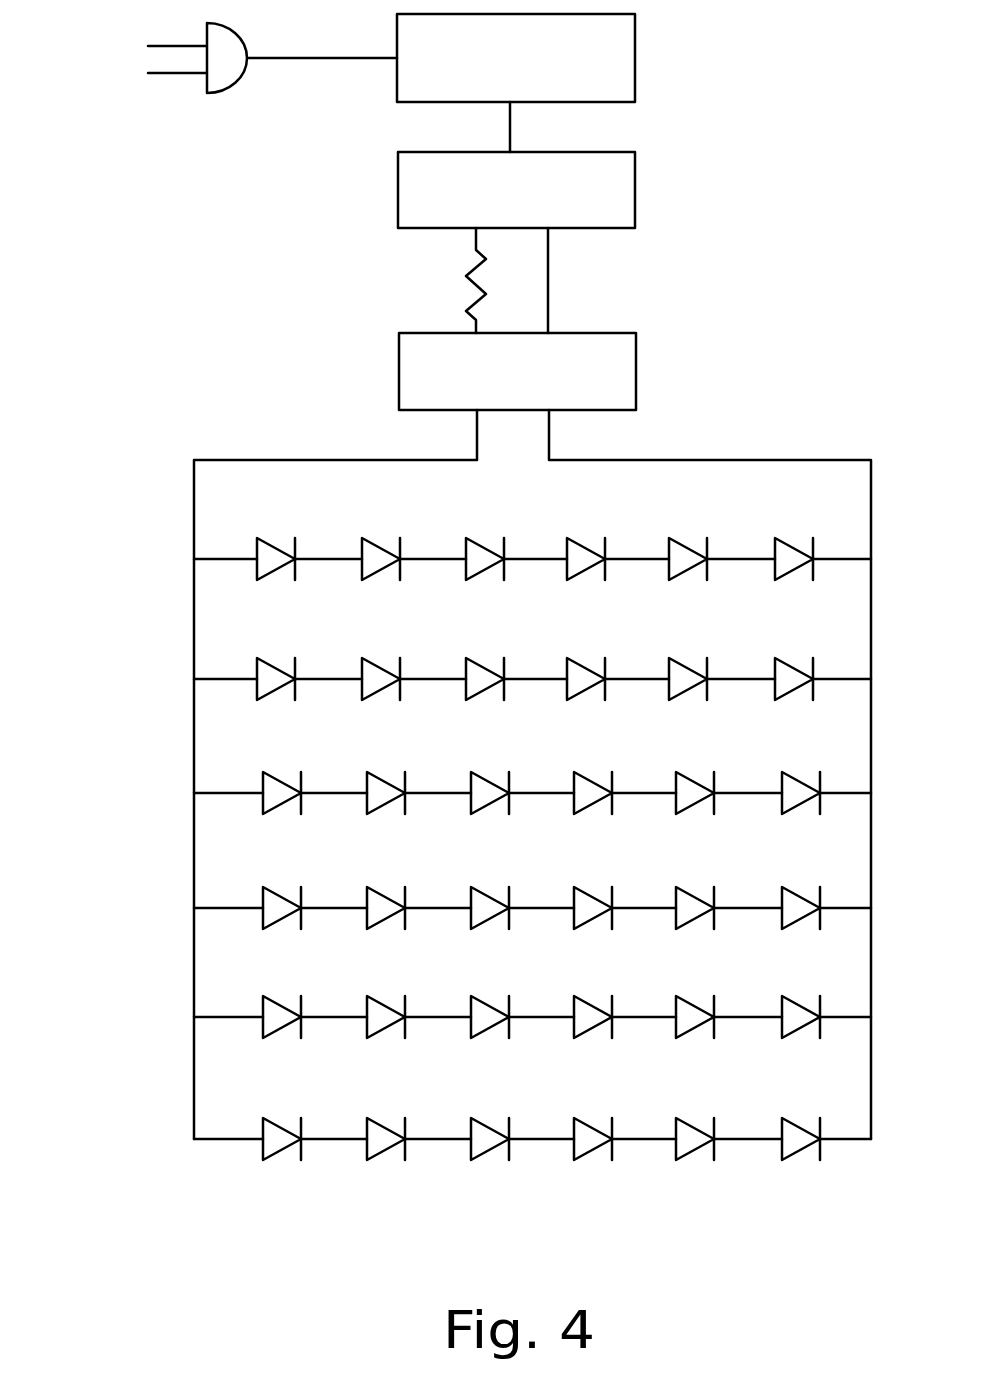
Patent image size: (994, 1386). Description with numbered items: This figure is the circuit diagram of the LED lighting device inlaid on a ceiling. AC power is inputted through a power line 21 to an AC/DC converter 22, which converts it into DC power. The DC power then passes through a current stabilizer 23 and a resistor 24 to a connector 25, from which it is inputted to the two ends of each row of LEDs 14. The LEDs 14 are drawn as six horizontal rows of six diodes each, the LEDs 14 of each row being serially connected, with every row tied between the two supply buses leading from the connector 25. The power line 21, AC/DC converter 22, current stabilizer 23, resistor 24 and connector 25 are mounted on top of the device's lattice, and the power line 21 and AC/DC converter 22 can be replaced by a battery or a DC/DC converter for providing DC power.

The LED 14 is at (680, 565).
The power line 21 is at (198, 73).
The AC/DC converter 22 is at (516, 58).
The current stabilizer 23 is at (516, 190).
The resistor 24 is at (453, 280).
The connector 25 is at (517, 371).